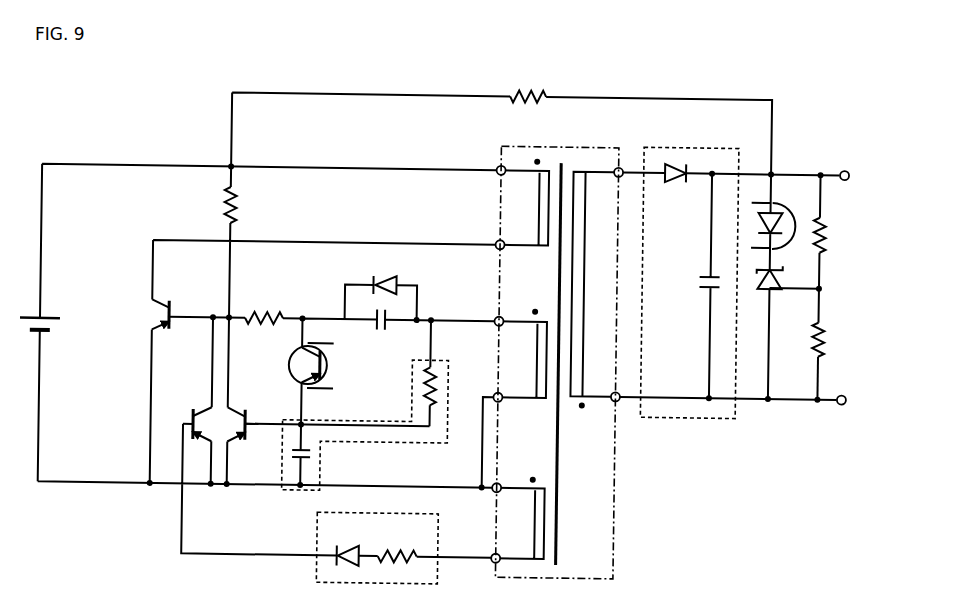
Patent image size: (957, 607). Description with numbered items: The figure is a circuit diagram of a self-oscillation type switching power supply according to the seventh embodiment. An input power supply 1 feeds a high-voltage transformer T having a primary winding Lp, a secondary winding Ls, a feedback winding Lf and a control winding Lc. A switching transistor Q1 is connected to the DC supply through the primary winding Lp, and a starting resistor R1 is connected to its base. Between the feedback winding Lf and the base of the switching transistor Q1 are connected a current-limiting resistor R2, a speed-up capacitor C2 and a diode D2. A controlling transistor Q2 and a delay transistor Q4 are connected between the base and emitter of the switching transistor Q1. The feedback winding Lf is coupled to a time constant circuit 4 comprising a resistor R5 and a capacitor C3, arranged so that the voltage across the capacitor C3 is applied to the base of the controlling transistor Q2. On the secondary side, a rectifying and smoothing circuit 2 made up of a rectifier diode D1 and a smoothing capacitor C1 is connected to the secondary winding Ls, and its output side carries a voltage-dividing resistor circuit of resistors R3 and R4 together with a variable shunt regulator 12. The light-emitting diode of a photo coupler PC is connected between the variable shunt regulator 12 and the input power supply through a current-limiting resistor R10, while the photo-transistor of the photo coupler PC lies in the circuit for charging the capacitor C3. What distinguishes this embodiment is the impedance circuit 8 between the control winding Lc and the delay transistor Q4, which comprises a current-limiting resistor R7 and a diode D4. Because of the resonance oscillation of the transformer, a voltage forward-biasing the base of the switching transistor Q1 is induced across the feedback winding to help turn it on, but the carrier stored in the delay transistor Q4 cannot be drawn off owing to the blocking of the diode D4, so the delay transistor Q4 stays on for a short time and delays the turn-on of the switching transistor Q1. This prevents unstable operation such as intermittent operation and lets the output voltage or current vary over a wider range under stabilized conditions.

The input power supply 1 is at (47, 337).
The rectifying and smoothing circuit 2 is at (736, 144).
The time constant circuit 4 is at (362, 422).
The impedance circuit 8 is at (394, 514).
The variable shunt regulator 12 is at (762, 288).
The high-voltage transformer T is at (557, 345).
The starting resistor R1 is at (246, 205).
The current-limiting resistor R2 is at (264, 304).
The voltage-dividing resistor R3 is at (832, 249).
The voltage-dividing resistor R4 is at (831, 362).
The resistor R5 is at (413, 386).
The current-limiting resistor R7 is at (398, 542).
The current-limiting resistor R10 is at (528, 82).
The switching transistor Q1 is at (161, 320).
The controlling transistor Q2 is at (249, 413).
The delay transistor Q4 is at (197, 413).
The photo coupler PC is at (291, 364).
The rectifier diode D1 is at (679, 185).
The diode D2 is at (384, 273).
The diode D4 is at (347, 544).
The smoothing capacitor C1 is at (699, 285).
The speed-up capacitor C2 is at (382, 329).
The capacitor C3 is at (316, 459).
The primary winding Lp is at (524, 201).
The feedback winding Lf is at (522, 353).
The control winding Lc is at (520, 517).
The secondary winding Ls is at (592, 290).